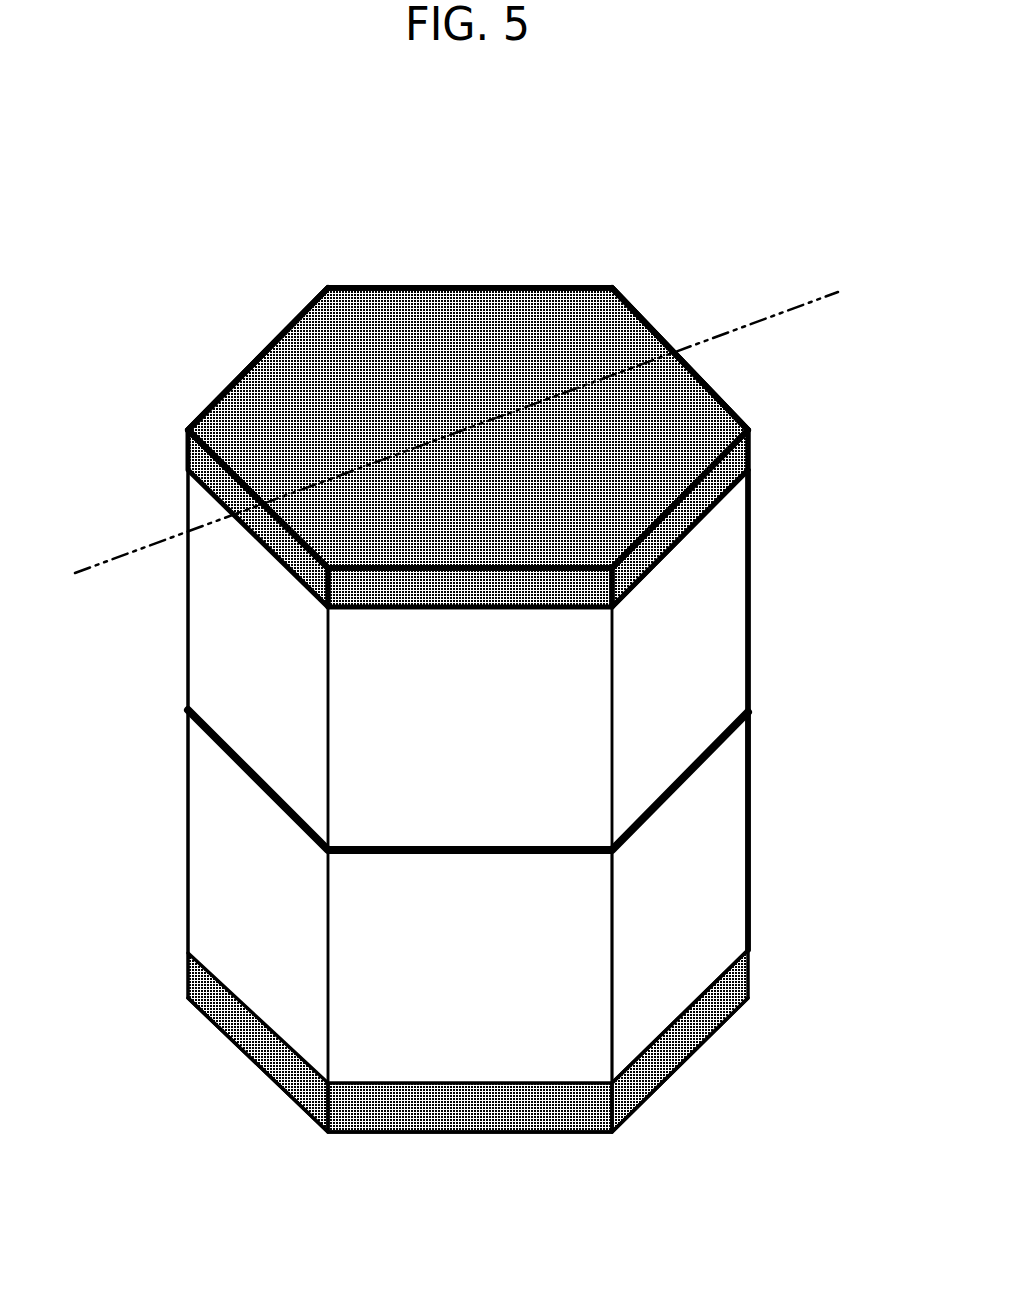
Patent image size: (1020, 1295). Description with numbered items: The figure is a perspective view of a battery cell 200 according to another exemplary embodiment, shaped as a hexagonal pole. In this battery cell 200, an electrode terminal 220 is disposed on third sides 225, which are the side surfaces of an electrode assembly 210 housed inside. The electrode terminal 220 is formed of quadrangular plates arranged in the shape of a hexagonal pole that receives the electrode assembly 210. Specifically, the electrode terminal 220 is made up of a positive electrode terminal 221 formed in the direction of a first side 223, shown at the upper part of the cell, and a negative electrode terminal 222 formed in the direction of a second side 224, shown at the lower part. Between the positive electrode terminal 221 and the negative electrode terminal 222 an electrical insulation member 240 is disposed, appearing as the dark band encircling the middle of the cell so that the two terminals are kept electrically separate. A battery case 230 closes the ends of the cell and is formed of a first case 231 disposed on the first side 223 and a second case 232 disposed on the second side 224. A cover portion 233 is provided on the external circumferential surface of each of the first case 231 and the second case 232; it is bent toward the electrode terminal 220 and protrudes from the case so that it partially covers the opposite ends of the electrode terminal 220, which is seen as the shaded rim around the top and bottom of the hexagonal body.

The battery cell 200 is at (148, 257).
The electrode assembly 210 is at (712, 593).
The electrode terminal 220 is at (750, 653).
The positive electrode terminal 221 is at (218, 715).
The negative electrode terminal 222 is at (210, 940).
The first side 223 is at (228, 360).
The second side 224 is at (652, 1107).
The third side 225 is at (728, 851).
The battery case 230 is at (418, 338).
The first case 231 is at (708, 380).
The second case 232 is at (718, 1030).
The cover portion 233 is at (730, 468).
The electrical insulation member 240 is at (748, 716).